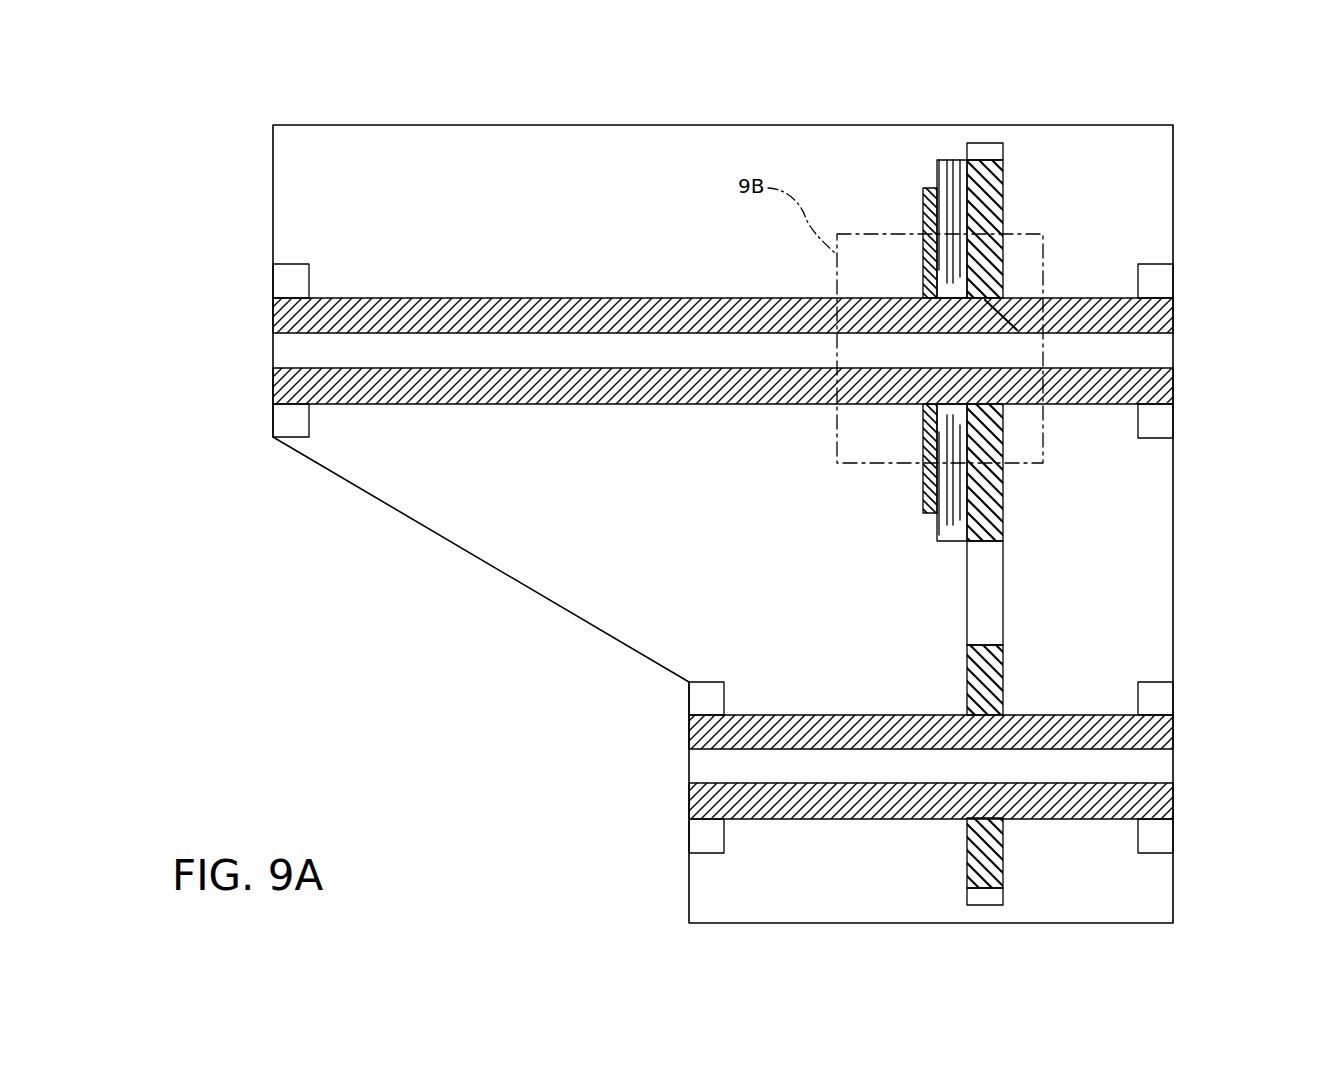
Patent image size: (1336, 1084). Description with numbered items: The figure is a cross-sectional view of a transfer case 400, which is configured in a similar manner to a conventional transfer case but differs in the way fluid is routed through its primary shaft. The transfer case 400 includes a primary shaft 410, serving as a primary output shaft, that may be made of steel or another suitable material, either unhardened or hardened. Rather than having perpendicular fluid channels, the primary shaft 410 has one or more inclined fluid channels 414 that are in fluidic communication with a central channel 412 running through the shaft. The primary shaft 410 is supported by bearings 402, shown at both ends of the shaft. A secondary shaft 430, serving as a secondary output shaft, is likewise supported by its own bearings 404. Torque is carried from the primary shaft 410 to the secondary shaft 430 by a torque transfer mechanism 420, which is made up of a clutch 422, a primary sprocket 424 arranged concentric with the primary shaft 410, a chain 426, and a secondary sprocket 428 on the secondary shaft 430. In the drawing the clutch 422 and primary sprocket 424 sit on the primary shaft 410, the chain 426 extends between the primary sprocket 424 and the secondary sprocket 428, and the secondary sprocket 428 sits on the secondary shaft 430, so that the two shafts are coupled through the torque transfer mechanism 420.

The transfer case 400 is at (182, 166).
The bearings 402 is at (725, 308).
The bearings 404 is at (933, 723).
The primary shaft 410 is at (495, 298).
The central channel 412 is at (545, 333).
The inclined fluid channels 414 is at (955, 402).
The torque transfer mechanism 420 is at (875, 170).
The clutch 422 is at (940, 160).
The primary sprocket 424 is at (1004, 186).
The chain 426 is at (993, 143).
The secondary sprocket 428 is at (1003, 870).
The secondary shaft 430 is at (812, 715).